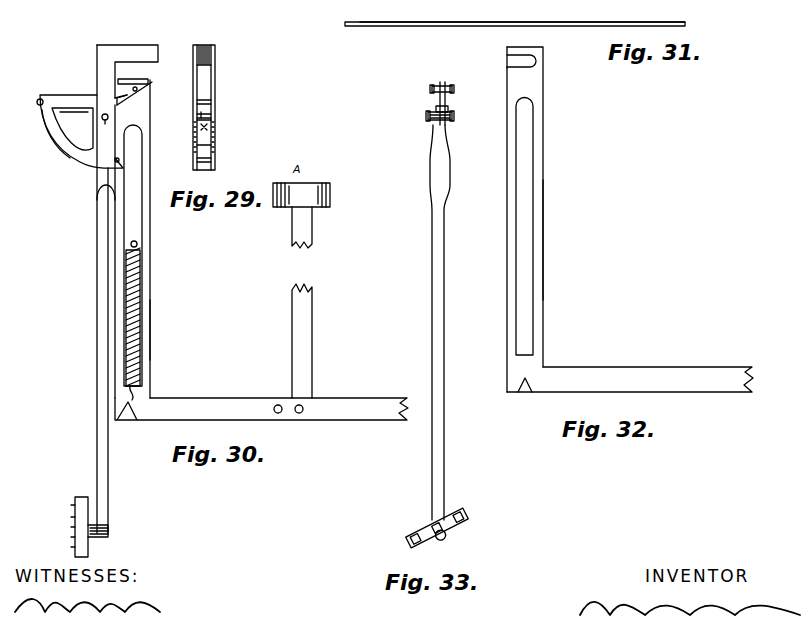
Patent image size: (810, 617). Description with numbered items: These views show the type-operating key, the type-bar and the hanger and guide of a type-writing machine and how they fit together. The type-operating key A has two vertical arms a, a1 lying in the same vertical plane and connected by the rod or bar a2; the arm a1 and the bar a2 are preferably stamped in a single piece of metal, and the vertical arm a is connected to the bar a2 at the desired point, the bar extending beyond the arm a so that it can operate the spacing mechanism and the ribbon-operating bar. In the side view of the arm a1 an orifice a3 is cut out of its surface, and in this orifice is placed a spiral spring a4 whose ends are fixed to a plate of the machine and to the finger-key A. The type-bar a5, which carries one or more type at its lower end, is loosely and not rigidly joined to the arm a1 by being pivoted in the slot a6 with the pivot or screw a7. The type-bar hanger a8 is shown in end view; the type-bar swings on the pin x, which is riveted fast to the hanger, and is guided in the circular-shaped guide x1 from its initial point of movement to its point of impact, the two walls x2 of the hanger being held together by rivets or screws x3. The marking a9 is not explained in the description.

In FIG. 30, the bar A is at (140, 239).
In FIG. 32, the bar A is at (543, 84).
In FIG. 30, the stem a is at (293, 348).
In FIG. 30, the bar edge a1 is at (150, 330).
In FIG. 31, the bar edge a1 is at (357, 22).
In FIG. 32, the bar edge a1 is at (543, 256).
In FIG. 30, the base arm a2 is at (261, 409).
In FIG. 31, the base arm a2 is at (471, 22).
In FIG. 32, the base arm a2 is at (630, 379).
In FIG. 30, the slot a3 is at (133, 255).
In FIG. 32, the slot a3 is at (524, 227).
In FIG. 30, the rack a4 is at (143, 286).
In FIG. 30, the rod a5 is at (97, 405).
In FIG. 33, the rod a5 is at (444, 440).
In FIG. 30, the hook lug a6 is at (133, 73).
In FIG. 32, the hook lug a6 is at (507, 56).
In FIG. 30, the lever a7 is at (150, 85).
In FIG. 33, the lever a7 is at (432, 90).
In FIG. 29, the sleeve a8 is at (215, 92).
In FIG. 30, the lip a9 is at (114, 89).
In FIG. 30, the sector plate pivot x is at (81, 131).
In FIG. 33, the sector plate pivot x is at (428, 117).
In FIG. 30, the sector opening x1 is at (74, 124).
In FIG. 29, the sector opening x1 is at (194, 150).
In FIG. 30, the sector curved edge x2 is at (56, 134).
In FIG. 29, the sector curved edge x2 is at (215, 128).
In FIG. 30, the sector holes x3 is at (114, 160).
In FIG. 29, the sector holes x3 is at (205, 119).